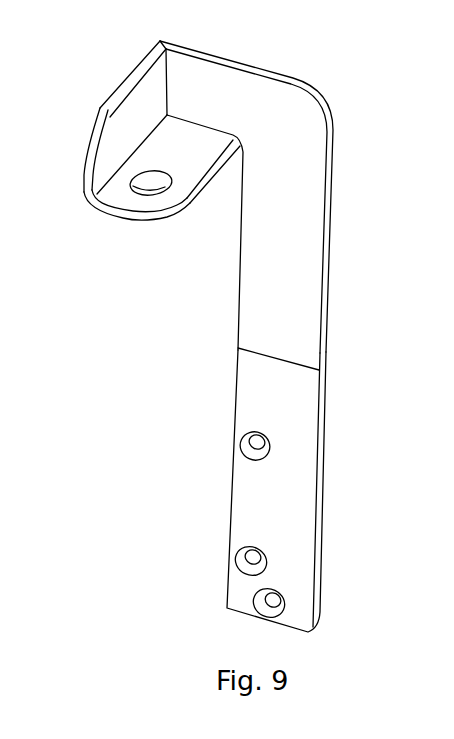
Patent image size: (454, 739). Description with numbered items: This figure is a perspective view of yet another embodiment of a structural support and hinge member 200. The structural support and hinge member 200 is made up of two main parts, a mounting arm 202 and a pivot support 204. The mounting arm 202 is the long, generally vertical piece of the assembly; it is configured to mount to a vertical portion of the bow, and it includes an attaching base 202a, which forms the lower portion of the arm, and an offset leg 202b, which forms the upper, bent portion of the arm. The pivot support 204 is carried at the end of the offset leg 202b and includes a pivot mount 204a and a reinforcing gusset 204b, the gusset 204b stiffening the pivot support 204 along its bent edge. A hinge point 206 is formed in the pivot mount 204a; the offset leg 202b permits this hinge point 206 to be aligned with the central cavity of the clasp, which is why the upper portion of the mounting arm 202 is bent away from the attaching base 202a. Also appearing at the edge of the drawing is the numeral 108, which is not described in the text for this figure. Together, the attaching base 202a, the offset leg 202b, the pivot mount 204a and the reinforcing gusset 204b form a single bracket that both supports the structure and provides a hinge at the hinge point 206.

The structural support and hinge member 200 is at (188, 325).
The mounting arm 202 is at (312, 300).
The attaching base 202a is at (278, 490).
The offset leg 202b is at (247, 92).
The pivot support 204 is at (102, 210).
The pivot mount 204a is at (157, 217).
The reinforcing gusset 204b is at (92, 145).
The hinge point 206 is at (152, 186).
The frame member 108 is at (0, 513).